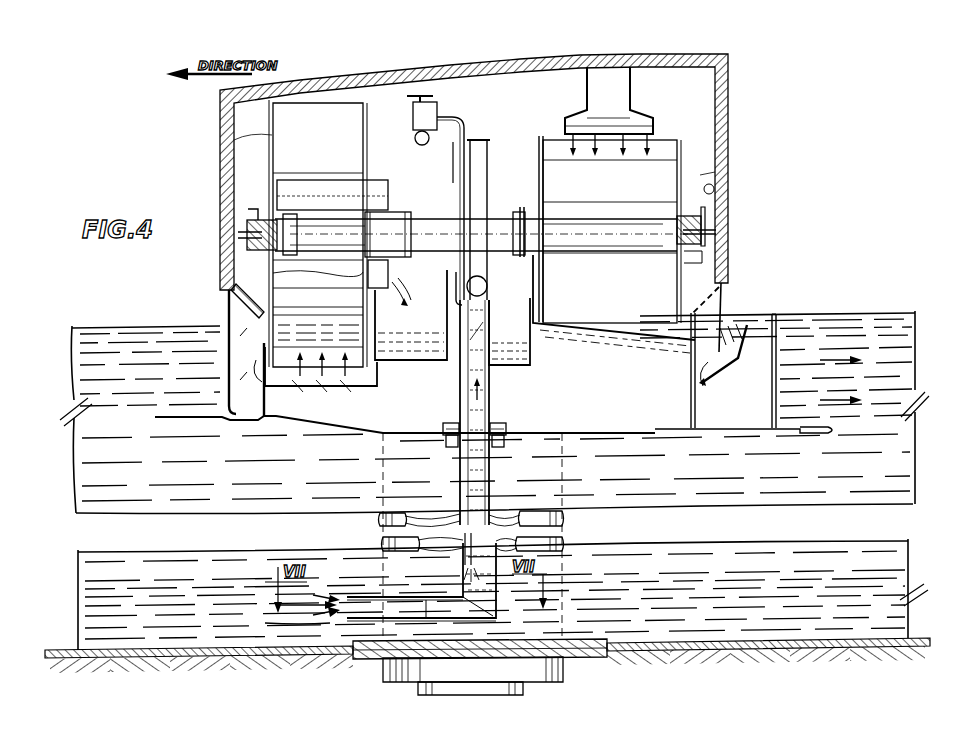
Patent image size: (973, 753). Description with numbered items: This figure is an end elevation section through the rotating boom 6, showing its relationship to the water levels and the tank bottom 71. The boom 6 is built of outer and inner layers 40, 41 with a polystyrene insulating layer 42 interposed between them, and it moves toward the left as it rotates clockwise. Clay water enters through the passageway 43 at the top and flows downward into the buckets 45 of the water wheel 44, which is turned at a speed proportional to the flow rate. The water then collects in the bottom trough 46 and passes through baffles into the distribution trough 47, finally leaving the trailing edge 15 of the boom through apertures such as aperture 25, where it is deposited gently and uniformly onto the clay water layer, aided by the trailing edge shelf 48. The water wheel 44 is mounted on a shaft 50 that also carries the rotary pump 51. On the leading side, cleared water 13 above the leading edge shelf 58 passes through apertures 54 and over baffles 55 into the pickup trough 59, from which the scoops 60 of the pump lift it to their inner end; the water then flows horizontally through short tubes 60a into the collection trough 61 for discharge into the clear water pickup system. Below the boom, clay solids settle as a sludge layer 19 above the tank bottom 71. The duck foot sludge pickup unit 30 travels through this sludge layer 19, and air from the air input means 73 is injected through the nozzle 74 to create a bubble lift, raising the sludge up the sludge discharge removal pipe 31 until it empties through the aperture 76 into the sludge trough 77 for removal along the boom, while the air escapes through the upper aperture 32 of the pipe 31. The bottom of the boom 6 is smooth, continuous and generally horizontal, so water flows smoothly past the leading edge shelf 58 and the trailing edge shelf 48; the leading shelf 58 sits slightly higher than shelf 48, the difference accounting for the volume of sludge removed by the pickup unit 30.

The boom 6 is at (730, 115).
The cleared water layer 13 is at (72, 328).
The trailing edge / clay water layer 15 is at (918, 356).
The sludge layer 19 is at (86, 605).
The aperture 25 is at (776, 376).
The duck foot sludge pickup unit 30 is at (372, 641).
The sludge discharge removal pipe 31 is at (492, 494).
The upper aperture 32 is at (476, 142).
The outer layer 40 is at (728, 172).
The inner layer 41 is at (714, 190).
The polystyrene insulating layer 42 is at (717, 231).
The passageway 43 is at (606, 84).
The water wheel 44 is at (540, 150).
The buckets 45 is at (657, 146).
The bottom trough 46 is at (640, 342).
The distribution trough 47 is at (772, 404).
The trailing edge shelf 48 is at (788, 434).
The shaft 50 is at (435, 217).
The rotary pump 51 is at (220, 138).
The apertures 54 is at (228, 362).
The baffles 55 is at (266, 395).
The leading edge shelf 58 is at (192, 418).
The pickup trough 59 is at (360, 387).
The scoops 60 is at (363, 136).
The short tubes 60a is at (378, 180).
The collection trough 61 is at (420, 361).
The tank bottom 71 is at (146, 654).
The air input means 73 is at (456, 118).
The nozzle 74 is at (463, 561).
The aperture 76 is at (487, 287).
The sludge trough 77 is at (530, 359).